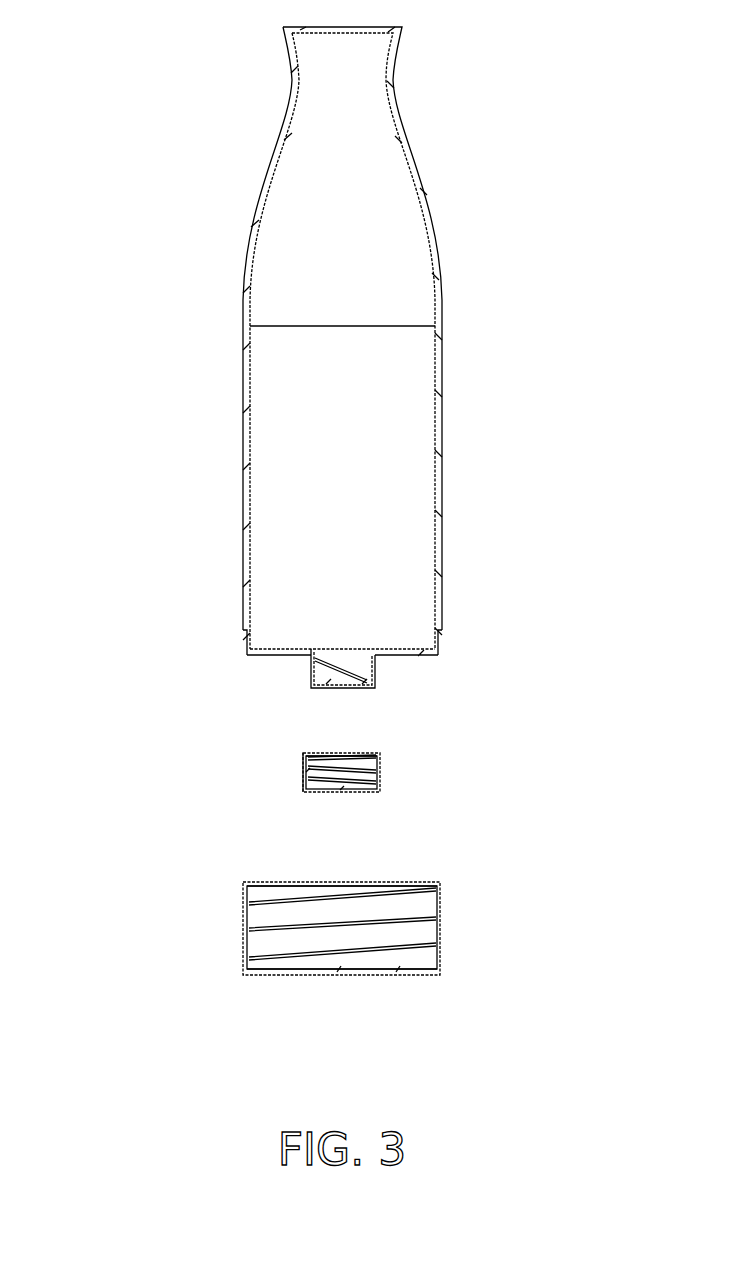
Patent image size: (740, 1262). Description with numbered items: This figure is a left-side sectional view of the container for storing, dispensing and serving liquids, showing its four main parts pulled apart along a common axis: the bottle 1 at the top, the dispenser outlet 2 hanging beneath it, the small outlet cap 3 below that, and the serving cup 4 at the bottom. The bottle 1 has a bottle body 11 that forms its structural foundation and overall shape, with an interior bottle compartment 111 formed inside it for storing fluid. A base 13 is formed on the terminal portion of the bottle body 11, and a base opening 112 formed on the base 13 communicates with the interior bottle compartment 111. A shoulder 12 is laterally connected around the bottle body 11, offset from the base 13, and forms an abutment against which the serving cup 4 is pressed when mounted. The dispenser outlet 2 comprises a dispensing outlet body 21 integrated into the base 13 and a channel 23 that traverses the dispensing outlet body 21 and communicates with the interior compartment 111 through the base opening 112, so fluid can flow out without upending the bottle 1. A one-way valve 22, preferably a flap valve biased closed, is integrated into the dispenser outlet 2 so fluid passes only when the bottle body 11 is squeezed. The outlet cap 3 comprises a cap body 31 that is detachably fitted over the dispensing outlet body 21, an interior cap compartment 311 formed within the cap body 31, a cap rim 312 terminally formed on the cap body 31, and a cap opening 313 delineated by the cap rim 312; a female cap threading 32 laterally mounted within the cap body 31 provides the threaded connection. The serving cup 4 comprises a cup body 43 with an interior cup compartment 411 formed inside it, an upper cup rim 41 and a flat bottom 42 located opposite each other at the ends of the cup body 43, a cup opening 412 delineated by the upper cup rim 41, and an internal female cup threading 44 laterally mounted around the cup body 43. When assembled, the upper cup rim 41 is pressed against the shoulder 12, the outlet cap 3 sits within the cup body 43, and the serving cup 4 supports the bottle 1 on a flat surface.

The bottle 1 is at (568, 362).
The bottle body 11 is at (435, 430).
The interior bottle compartment 111 is at (354, 281).
The base opening 112 is at (324, 642).
The shoulder 12 is at (239, 634).
The base 13 is at (266, 656).
The dispenser outlet 2 is at (418, 687).
The dispensing outlet body 21 is at (311, 660).
The one-way valve 22 is at (362, 641).
The channel 23 is at (330, 683).
The outlet cap 3 is at (380, 772).
The cap body 31 is at (366, 742).
The interior cap compartment 311 is at (350, 779).
The cap rim 312 is at (305, 749).
The cap opening 313 is at (349, 746).
The female cap threading 32 is at (337, 778).
The serving cup 4 is at (443, 917).
The upper cup rim 41 is at (446, 874).
The interior cup compartment 411 is at (299, 942).
The cup opening 412 is at (421, 874).
The flat bottom 42 is at (425, 983).
The cup body 43 is at (337, 903).
The internal female cup threading 44 is at (267, 927).